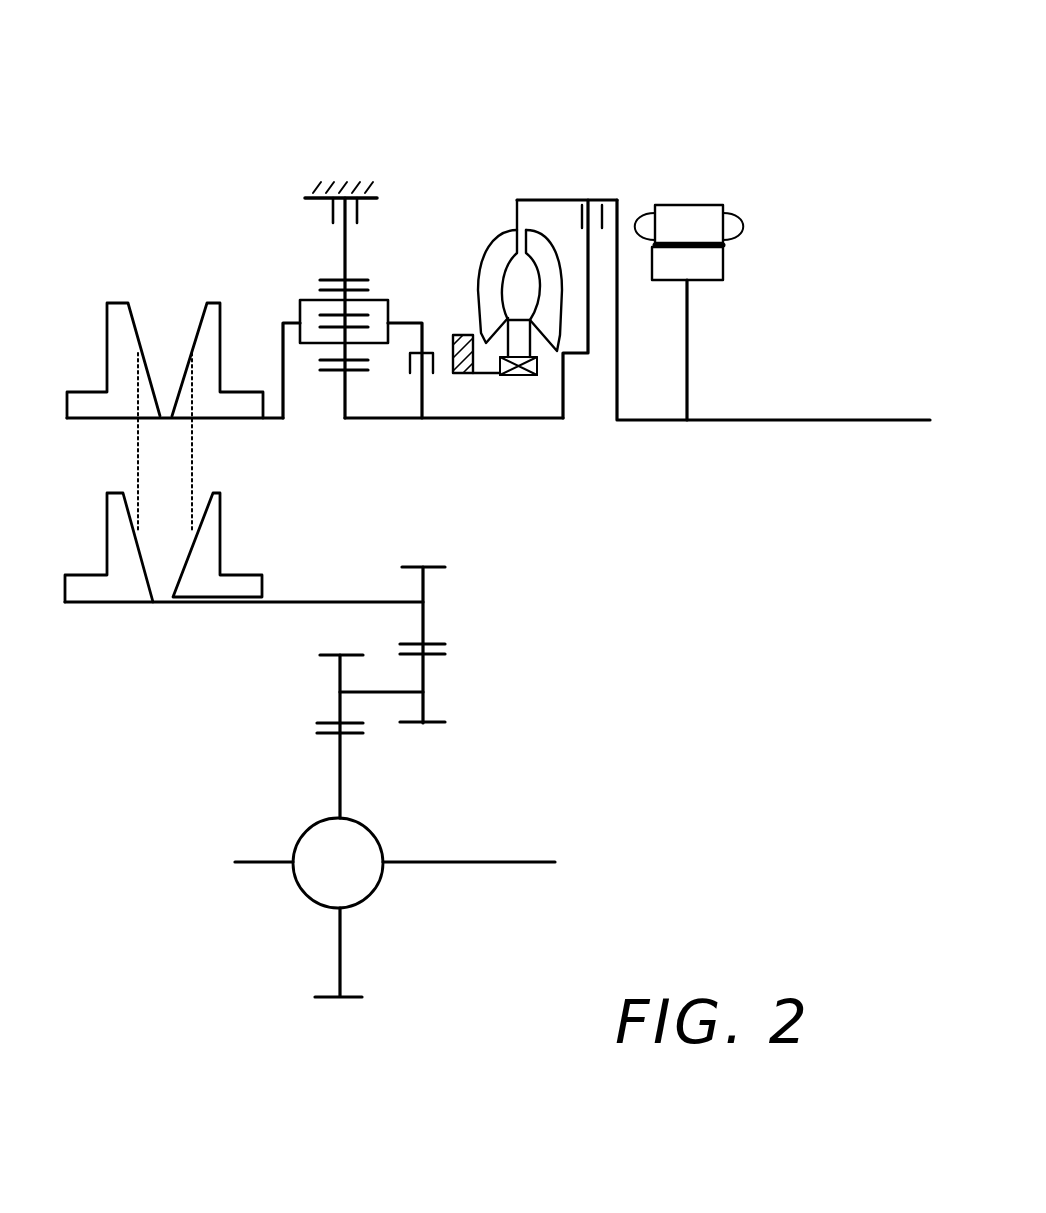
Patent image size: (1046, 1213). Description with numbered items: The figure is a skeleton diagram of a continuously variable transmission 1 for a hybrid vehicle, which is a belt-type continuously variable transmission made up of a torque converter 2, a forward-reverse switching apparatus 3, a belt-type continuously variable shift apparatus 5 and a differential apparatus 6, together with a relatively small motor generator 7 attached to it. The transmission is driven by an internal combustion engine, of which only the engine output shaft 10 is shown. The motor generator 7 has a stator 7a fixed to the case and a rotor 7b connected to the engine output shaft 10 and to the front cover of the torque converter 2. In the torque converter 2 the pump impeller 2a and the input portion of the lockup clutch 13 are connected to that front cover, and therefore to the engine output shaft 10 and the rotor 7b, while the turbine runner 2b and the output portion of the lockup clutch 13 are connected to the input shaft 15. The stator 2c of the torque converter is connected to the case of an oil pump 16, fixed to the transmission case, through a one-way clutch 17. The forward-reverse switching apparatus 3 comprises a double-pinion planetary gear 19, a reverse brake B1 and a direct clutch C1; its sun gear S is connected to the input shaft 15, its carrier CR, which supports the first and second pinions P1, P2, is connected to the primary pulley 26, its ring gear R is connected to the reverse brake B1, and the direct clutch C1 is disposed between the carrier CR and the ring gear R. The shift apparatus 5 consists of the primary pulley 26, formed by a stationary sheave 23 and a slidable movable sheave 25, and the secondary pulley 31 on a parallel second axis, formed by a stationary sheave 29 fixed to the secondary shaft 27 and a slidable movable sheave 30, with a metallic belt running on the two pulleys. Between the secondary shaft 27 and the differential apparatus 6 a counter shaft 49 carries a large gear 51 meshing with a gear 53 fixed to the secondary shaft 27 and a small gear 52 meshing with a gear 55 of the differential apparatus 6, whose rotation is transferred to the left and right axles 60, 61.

The continuously variable transmission 1 is at (445, 82).
The torque converter 2 is at (495, 291).
The pump impeller 2a is at (497, 250).
The turbine runner 2b is at (543, 247).
The stator 2c is at (527, 343).
The forward-reverse switching apparatus 3 is at (322, 273).
The belt-type continuously variable shift apparatus 5 is at (175, 344).
The differential apparatus 6 is at (383, 881).
The motor generator 7 is at (719, 262).
The stator 7a is at (712, 210).
The rotor 7b is at (715, 258).
The engine output shaft 10 is at (800, 421).
The lockup clutch 13 is at (594, 200).
The input shaft 15 is at (433, 422).
The oil pump 16 is at (463, 333).
The one-way clutch 17 is at (520, 377).
The double-pinion planetary gear 19 is at (373, 268).
The stationary sheave 23 is at (208, 303).
The movable sheave 25 is at (112, 303).
The primary pulley 26 is at (155, 277).
The secondary shaft 27 is at (333, 602).
The stationary sheave 29 is at (112, 493).
The movable sheave 30 is at (213, 492).
The secondary pulley 31 is at (183, 512).
The counter shaft 49 is at (383, 692).
The large gear 51 is at (433, 725).
The small gear 52 is at (330, 653).
The gear 53 is at (437, 565).
The gear 55 is at (327, 738).
The left axle 60 is at (248, 864).
The right axle 61 is at (428, 865).
The reverse brake B1 is at (360, 213).
The direct clutch C1 is at (430, 353).
The ring gear R is at (326, 278).
The first pinion P1 is at (330, 350).
The second pinion P2 is at (320, 290).
The carrier CR is at (300, 312).
The sun gear S is at (352, 377).